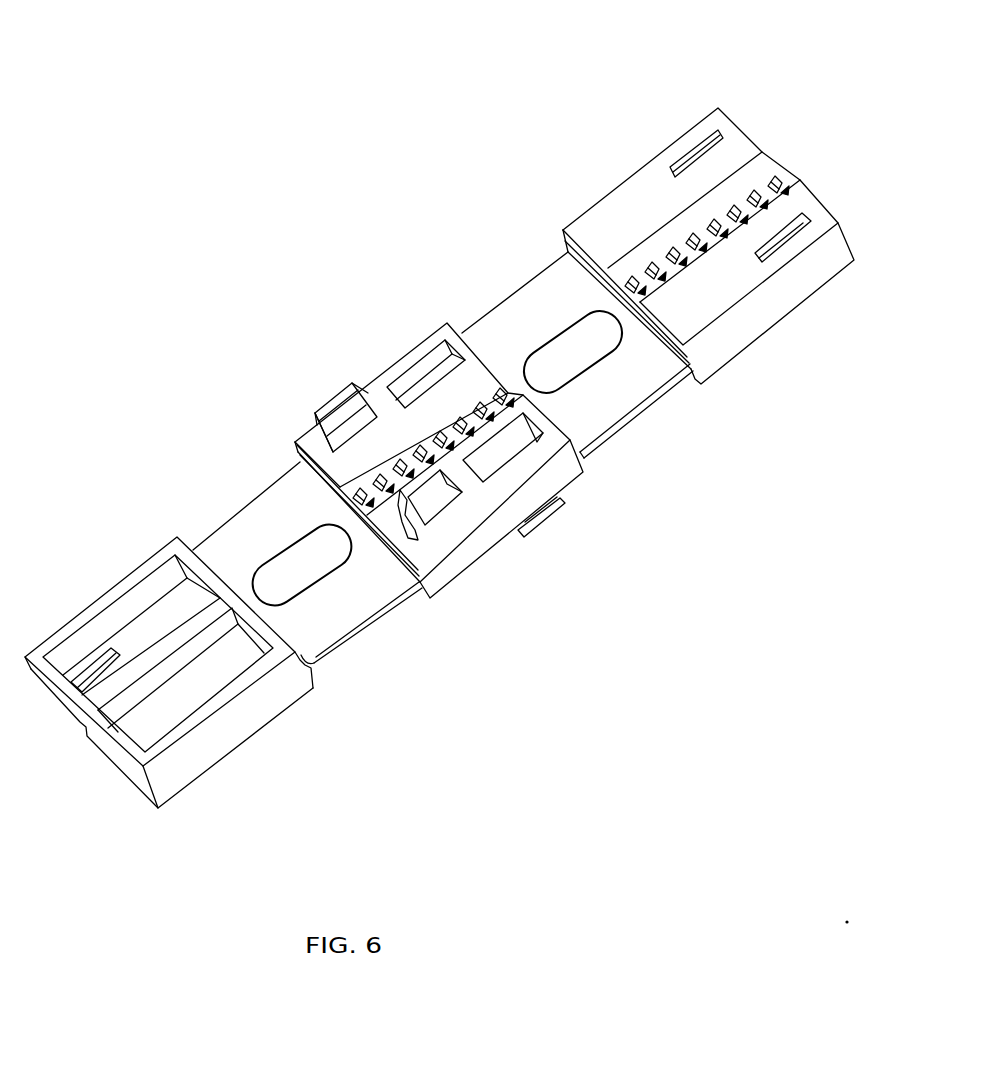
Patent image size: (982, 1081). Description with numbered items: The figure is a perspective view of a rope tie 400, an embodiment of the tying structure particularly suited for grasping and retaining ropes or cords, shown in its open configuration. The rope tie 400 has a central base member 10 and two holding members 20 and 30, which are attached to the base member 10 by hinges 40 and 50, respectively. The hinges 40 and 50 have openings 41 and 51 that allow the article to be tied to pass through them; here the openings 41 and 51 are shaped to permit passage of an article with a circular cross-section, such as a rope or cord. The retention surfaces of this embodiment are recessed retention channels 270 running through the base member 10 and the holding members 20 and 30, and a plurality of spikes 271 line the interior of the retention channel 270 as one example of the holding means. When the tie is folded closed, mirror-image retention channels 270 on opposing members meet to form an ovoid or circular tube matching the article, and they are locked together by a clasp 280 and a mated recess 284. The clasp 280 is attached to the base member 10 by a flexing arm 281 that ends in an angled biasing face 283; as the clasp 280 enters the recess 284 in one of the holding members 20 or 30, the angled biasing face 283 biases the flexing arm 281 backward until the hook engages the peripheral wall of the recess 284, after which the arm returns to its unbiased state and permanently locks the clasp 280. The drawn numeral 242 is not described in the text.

The base member 10 is at (478, 537).
The holding member 20 is at (743, 330).
The holding member 30 is at (232, 735).
The hinge 40 is at (605, 400).
The opening 41 is at (565, 357).
The hinge 50 is at (343, 603).
The opening 51 is at (287, 573).
The end wall of housing 242 is at (340, 443).
The recessed retention channel 270 is at (487, 380).
The spikes 271 is at (637, 253).
The clasp 280 is at (367, 397).
The flexing arm 281 is at (404, 498).
The angled biasing face 283 is at (343, 413).
The mated recess 284 is at (687, 163).
The rope tie 400 is at (518, 543).